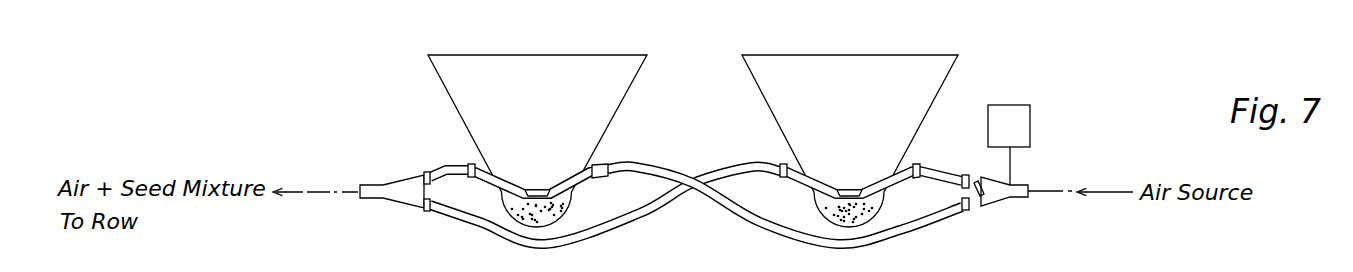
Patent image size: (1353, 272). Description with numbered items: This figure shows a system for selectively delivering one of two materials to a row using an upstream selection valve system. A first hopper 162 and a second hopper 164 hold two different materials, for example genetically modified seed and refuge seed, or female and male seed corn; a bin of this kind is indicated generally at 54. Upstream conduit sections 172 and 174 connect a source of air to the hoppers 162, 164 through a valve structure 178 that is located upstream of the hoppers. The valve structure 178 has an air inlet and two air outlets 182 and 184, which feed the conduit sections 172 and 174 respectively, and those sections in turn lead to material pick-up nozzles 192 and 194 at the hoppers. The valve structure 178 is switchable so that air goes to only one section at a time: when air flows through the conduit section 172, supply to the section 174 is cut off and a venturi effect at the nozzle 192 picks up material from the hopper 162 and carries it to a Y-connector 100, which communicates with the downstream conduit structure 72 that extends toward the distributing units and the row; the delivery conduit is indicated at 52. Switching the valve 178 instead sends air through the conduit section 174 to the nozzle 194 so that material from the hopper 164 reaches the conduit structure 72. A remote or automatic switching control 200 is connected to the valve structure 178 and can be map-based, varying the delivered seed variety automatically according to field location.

The seed delivery conduit 52 is at (442, 150).
The seed bin 54 is at (978, 63).
The downstream conduit structure 72 is at (352, 187).
The Y-connector 100 is at (388, 167).
The first hopper 162 is at (622, 77).
The second hopper 164 is at (765, 90).
The upstream conduit section 172 is at (640, 166).
The upstream conduit section 174 is at (932, 169).
The valve structure 178 is at (1029, 171).
The air outlet 182 is at (1020, 198).
The air outlet 184 is at (967, 174).
The material pick-up nozzle 192 is at (510, 182).
The material pick-up nozzle 194 is at (810, 177).
The switching control 200 is at (1042, 113).